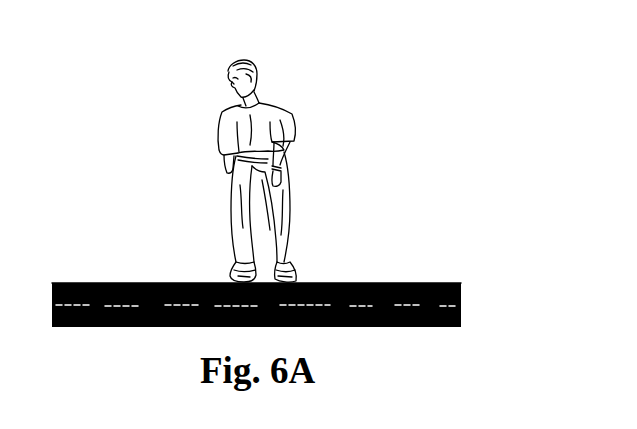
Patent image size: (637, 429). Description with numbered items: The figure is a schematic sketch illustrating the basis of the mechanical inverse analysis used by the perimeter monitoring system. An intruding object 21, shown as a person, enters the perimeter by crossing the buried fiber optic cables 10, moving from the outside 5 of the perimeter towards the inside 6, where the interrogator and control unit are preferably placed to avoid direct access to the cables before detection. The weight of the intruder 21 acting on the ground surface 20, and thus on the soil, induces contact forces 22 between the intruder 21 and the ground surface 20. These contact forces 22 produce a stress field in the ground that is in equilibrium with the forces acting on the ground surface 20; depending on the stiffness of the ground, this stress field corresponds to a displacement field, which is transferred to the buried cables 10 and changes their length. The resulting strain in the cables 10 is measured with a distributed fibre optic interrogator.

The buried fiber optic cables 10 is at (336, 283).
The ground surface 20 is at (310, 283).
The intruding object 21 is at (298, 141).
The contact forces 22 is at (234, 275).
The outside 5 is at (401, 221).
The inside 6 is at (113, 223).